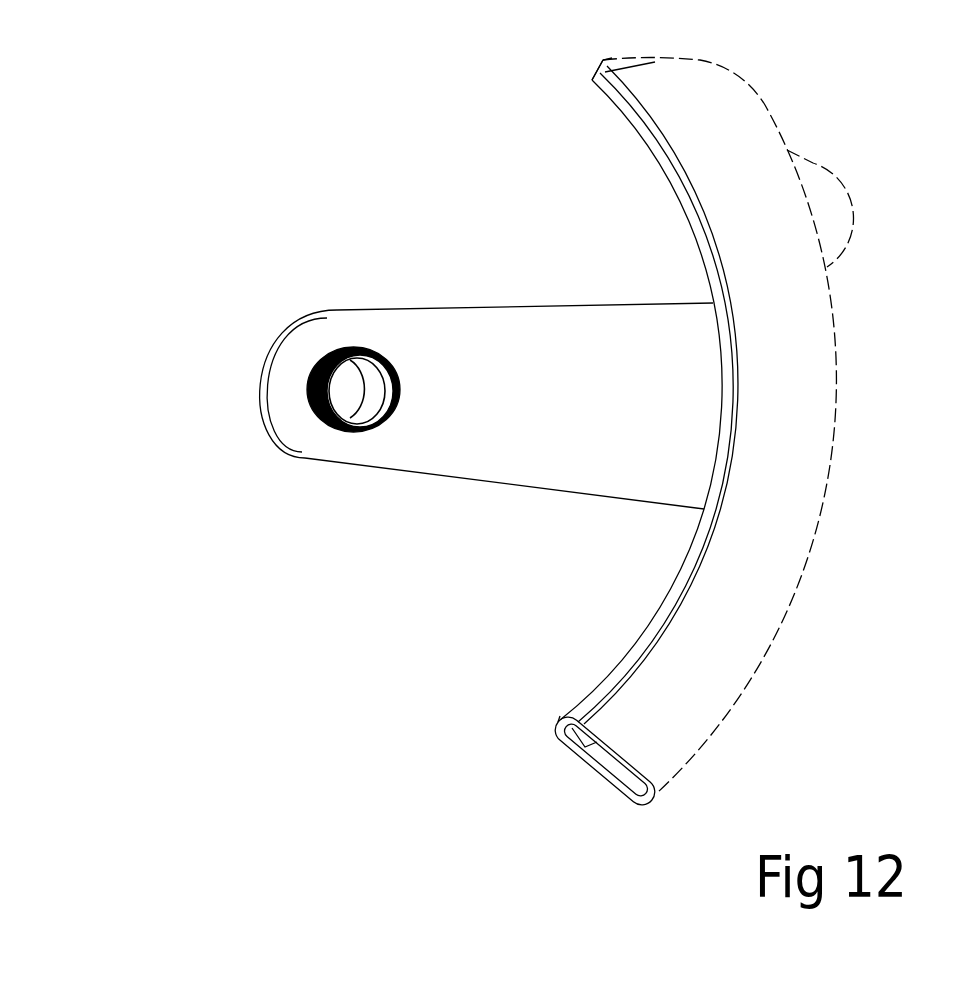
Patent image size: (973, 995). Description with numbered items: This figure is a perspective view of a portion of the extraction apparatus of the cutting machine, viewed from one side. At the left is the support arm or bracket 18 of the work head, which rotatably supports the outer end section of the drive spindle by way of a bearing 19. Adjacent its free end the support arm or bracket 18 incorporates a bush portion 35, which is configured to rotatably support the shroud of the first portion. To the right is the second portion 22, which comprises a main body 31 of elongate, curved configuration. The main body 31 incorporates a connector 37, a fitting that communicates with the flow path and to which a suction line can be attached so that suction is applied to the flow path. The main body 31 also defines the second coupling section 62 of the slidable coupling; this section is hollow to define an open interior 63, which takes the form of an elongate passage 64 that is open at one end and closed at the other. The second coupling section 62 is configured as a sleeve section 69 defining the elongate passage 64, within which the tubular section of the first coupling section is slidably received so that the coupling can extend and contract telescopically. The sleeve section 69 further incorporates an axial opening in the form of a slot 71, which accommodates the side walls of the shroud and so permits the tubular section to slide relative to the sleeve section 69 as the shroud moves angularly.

The support arm or bracket 18 is at (507, 367).
The bearing 19 is at (358, 367).
The second portion 22 is at (788, 97).
The main body 31 is at (778, 472).
The bush portion 35 is at (308, 400).
The connector 37 is at (830, 197).
The second coupling section 62 is at (700, 695).
The open interior 63 is at (610, 758).
The elongate passage 64 is at (575, 740).
The sleeve section 69 is at (743, 603).
The slot 71 is at (593, 72).